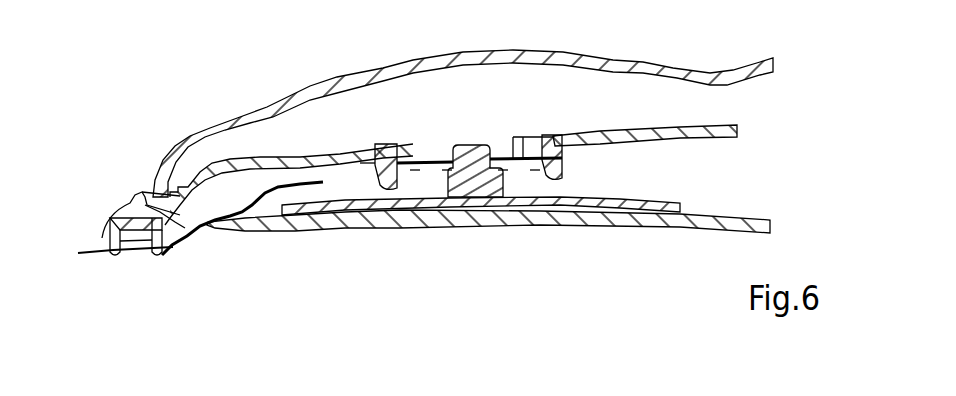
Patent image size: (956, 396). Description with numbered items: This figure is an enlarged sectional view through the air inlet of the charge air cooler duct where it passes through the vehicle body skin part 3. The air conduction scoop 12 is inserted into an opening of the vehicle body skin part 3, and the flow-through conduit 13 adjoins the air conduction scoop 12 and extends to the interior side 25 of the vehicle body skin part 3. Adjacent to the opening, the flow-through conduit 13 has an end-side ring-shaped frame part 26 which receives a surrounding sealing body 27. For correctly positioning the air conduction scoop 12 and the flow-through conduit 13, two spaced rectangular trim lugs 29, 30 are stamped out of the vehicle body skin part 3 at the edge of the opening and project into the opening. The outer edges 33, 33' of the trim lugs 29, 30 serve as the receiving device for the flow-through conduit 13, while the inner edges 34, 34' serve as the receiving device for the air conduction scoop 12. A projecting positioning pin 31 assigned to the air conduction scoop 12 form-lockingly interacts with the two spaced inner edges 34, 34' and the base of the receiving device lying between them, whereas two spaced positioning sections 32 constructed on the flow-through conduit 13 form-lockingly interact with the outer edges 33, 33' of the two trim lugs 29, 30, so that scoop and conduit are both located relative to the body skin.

The vehicle body skin part 3 is at (98, 256).
The air conduction scoop 12 is at (703, 238).
The flow-through conduit 13 is at (267, 104).
The interior side 25 is at (89, 242).
The ring-shaped frame part 26 is at (294, 159).
The sealing body 27 is at (170, 240).
The trim lug 29 is at (417, 161).
The trim lug 30 is at (520, 139).
The positioning pin 31 is at (468, 152).
The positioning section 32 is at (383, 147).
The outer edge 33 is at (406, 232).
The outer edge 33' is at (546, 222).
The inner edge 34 is at (453, 223).
The inner edge 34' is at (513, 238).